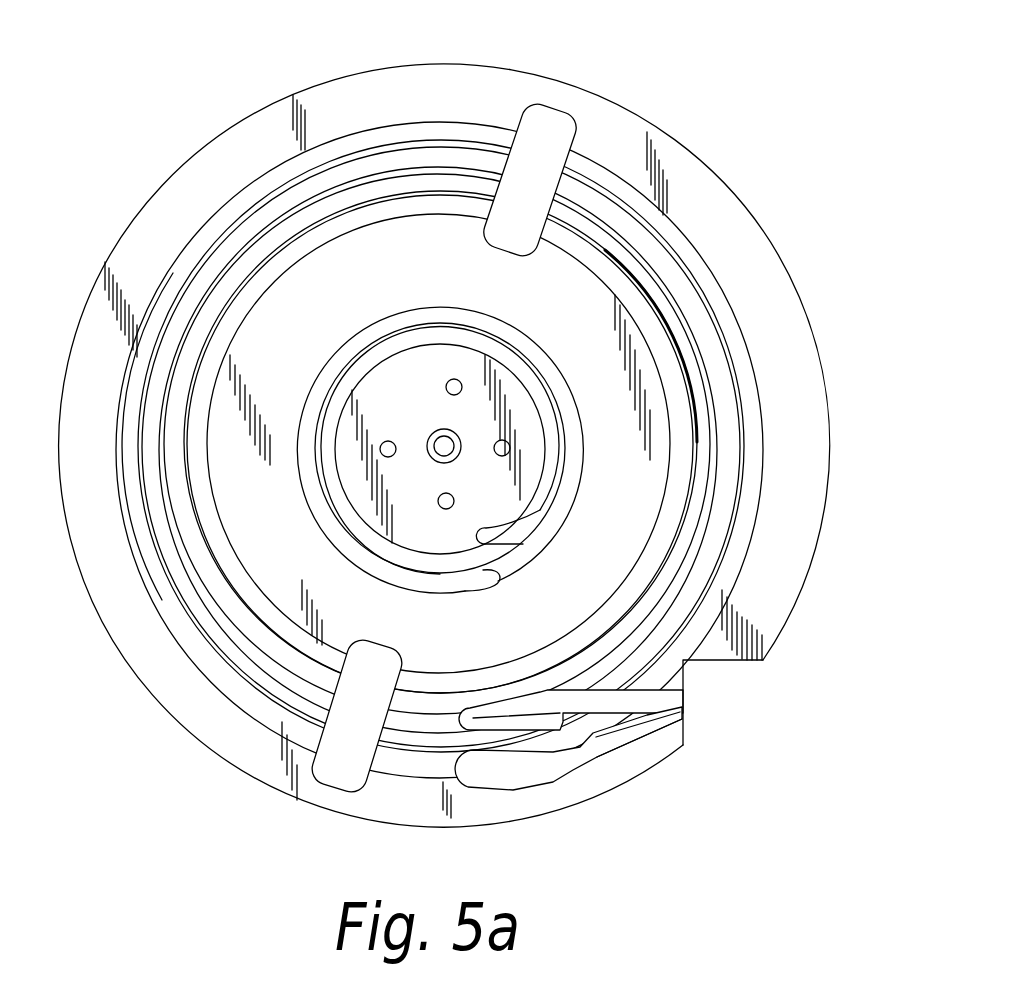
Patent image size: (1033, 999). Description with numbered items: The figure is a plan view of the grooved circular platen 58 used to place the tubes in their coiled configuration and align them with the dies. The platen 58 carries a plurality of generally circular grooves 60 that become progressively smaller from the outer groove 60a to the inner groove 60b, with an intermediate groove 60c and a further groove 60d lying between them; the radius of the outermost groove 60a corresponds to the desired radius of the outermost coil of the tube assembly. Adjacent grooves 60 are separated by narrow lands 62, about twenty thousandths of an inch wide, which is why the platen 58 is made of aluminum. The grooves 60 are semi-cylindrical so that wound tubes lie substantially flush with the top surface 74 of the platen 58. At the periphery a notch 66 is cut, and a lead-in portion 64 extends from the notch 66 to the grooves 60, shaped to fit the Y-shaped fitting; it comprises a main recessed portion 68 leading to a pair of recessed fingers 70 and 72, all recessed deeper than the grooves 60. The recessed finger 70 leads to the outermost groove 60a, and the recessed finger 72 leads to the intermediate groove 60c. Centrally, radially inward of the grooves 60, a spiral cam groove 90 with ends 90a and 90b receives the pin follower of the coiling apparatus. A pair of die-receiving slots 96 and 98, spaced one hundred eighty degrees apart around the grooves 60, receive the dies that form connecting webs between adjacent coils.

The grooved circular platen 58 is at (753, 203).
The circular grooves 60 is at (481, 423).
The outermost groove 60a is at (613, 180).
The inner groove 60b is at (573, 255).
The intermediate groove 60c is at (630, 258).
The groove 60d is at (577, 192).
The lands 62 is at (692, 417).
The lead-in portion 64 is at (600, 731).
The notch 66 is at (740, 660).
The main recessed portion 68 is at (637, 708).
The recessed finger 70 is at (513, 768).
The recessed finger 72 is at (503, 703).
The top surface 74 is at (793, 553).
The spiral cam groove 90 is at (362, 382).
The end of spiral cam groove 90a is at (499, 577).
The end of spiral cam groove 90b is at (487, 537).
The die-receiving slot 96 is at (345, 773).
The die-receiving slot 98 is at (540, 123).